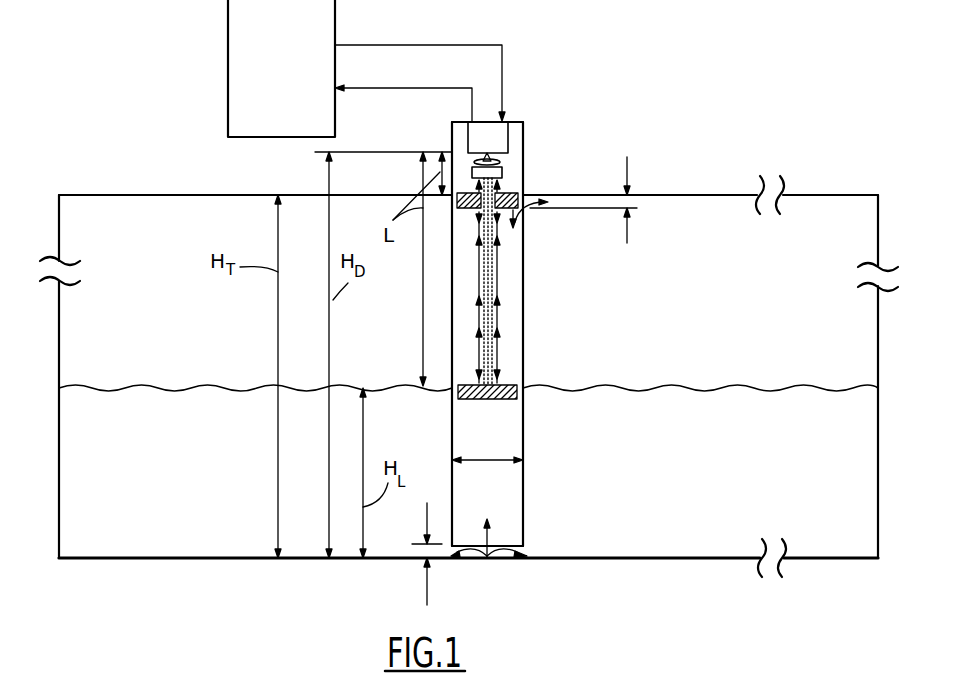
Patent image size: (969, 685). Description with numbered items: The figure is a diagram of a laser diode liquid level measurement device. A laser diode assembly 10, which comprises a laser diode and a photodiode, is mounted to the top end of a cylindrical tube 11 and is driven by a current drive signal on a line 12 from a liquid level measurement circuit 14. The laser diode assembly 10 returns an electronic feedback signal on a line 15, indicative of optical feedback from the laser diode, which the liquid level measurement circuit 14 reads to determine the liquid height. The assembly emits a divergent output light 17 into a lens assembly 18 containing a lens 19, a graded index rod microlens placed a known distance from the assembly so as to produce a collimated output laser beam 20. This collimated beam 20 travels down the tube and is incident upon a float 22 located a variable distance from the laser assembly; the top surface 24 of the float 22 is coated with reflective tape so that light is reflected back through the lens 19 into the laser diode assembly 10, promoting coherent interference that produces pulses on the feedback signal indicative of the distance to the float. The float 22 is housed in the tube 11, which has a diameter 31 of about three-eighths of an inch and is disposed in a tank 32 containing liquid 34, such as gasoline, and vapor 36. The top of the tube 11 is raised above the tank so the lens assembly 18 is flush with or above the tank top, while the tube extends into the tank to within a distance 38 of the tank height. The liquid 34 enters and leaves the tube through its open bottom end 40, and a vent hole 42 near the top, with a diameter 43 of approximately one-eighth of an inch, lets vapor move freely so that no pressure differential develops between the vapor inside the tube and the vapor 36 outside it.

The laser diode assembly 10 is at (498, 138).
The cylindrical tube 11 is at (515, 121).
The line 12 is at (360, 44).
The liquid level measurement circuit 14 is at (228, 80).
The line 15 is at (385, 88).
The divergent output light 17 is at (500, 158).
The lens assembly 18 is at (502, 170).
The lens 19 is at (473, 165).
The collimated output laser beam 20 is at (495, 333).
The float 22 is at (473, 400).
The top surface 24 is at (505, 385).
The diameter 31 is at (497, 458).
The tank 32 is at (59, 232).
The liquid 34 is at (93, 473).
The vapor 36 is at (92, 348).
The distance 38 is at (413, 557).
The bottom end 40 is at (520, 545).
The vent hole 42 is at (526, 205).
The diameter 43 is at (633, 201).